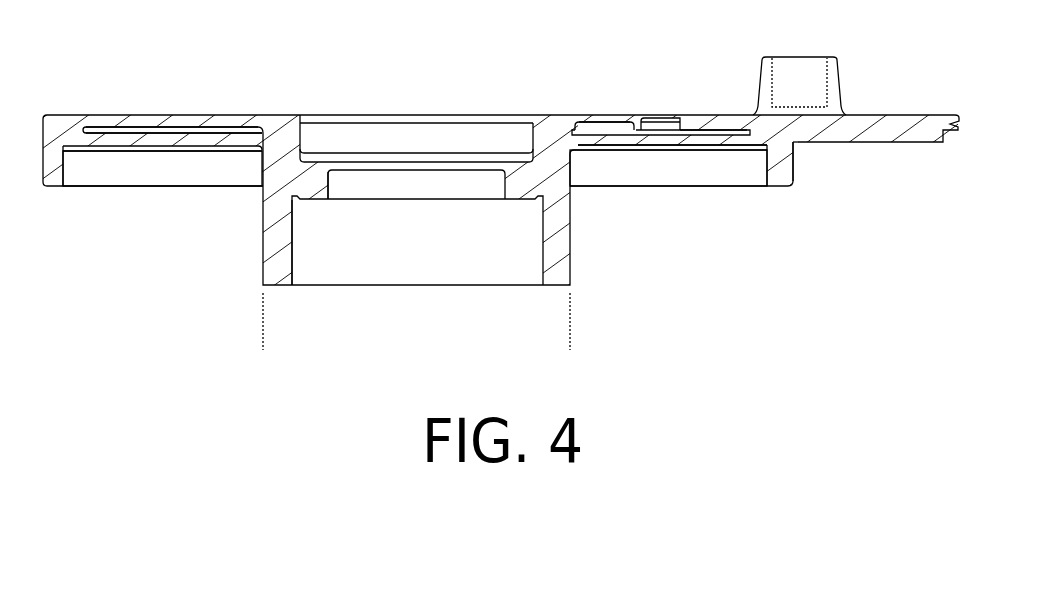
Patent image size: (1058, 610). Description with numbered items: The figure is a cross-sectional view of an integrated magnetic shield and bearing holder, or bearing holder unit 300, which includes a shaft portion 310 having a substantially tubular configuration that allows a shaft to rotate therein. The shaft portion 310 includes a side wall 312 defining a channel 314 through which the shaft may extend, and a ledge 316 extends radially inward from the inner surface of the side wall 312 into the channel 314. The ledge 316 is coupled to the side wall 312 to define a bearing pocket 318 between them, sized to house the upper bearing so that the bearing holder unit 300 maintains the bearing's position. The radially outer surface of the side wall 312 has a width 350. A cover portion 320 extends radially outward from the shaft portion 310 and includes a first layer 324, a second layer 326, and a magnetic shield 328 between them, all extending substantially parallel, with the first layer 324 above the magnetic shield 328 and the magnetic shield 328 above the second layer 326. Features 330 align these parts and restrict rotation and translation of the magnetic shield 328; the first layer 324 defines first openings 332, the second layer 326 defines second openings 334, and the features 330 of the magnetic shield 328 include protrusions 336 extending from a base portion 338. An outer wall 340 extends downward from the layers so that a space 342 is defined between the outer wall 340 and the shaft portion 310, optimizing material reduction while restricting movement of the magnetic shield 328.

The bearing holder unit 300 is at (197, 394).
The shaft portion 310 is at (407, 98).
The side wall 312 is at (575, 265).
The channel 314 is at (434, 238).
The ledge 316 is at (332, 181).
The bearing pocket 318 is at (299, 219).
The cover portion 320 is at (170, 95).
The first layer 324 is at (753, 124).
The second layer 326 is at (746, 139).
The magnetic shield 328 is at (123, 125).
The features 330 is at (658, 103).
The first openings 332 is at (683, 112).
The second openings 334 is at (643, 149).
The protrusions 336 is at (641, 113).
The base portion 338 is at (719, 126).
The outer wall 340 is at (58, 194).
The space 342 is at (166, 178).
The width 350 is at (569, 342).